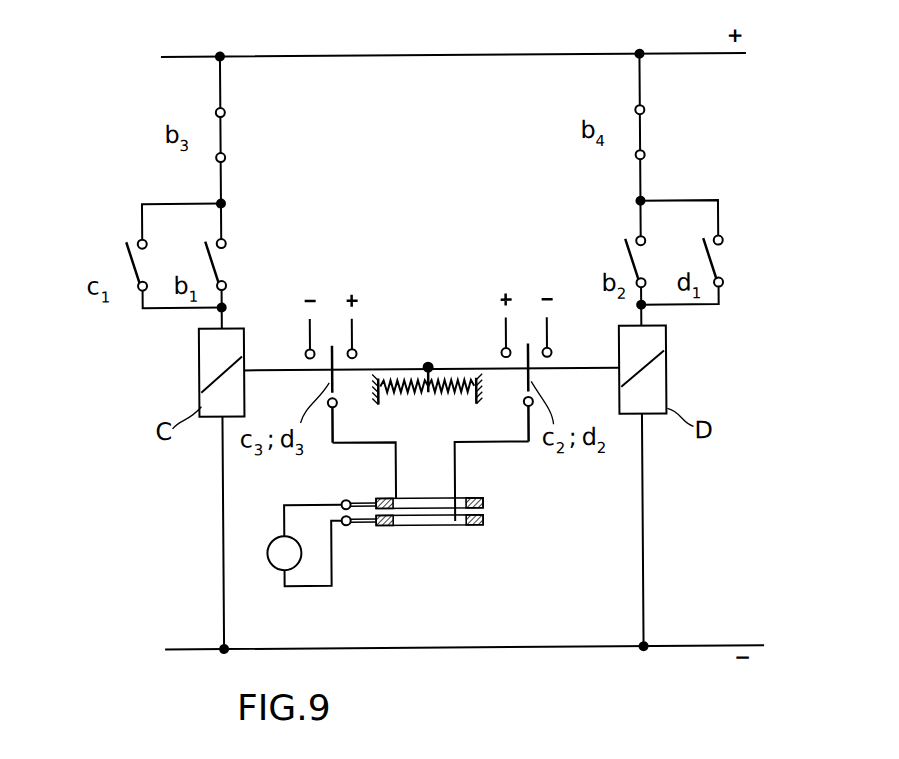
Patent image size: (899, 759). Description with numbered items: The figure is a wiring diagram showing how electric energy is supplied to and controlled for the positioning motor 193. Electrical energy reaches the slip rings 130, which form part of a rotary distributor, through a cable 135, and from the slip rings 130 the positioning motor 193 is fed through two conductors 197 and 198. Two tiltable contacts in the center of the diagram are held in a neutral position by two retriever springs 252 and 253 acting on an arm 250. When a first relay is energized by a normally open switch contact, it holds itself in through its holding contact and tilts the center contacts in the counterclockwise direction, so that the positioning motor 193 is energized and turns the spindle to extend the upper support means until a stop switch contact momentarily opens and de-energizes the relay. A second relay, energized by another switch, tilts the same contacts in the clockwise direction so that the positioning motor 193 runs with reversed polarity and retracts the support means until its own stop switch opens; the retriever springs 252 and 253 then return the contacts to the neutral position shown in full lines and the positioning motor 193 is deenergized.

The arm 250 is at (429, 362).
The retriever spring 252 is at (398, 381).
The retriever spring 253 is at (457, 381).
The cable 135 is at (450, 460).
The slip rings 130 is at (492, 505).
The conductor 197 is at (322, 502).
The conductor 198 is at (331, 567).
The positioning motor 193 is at (267, 561).